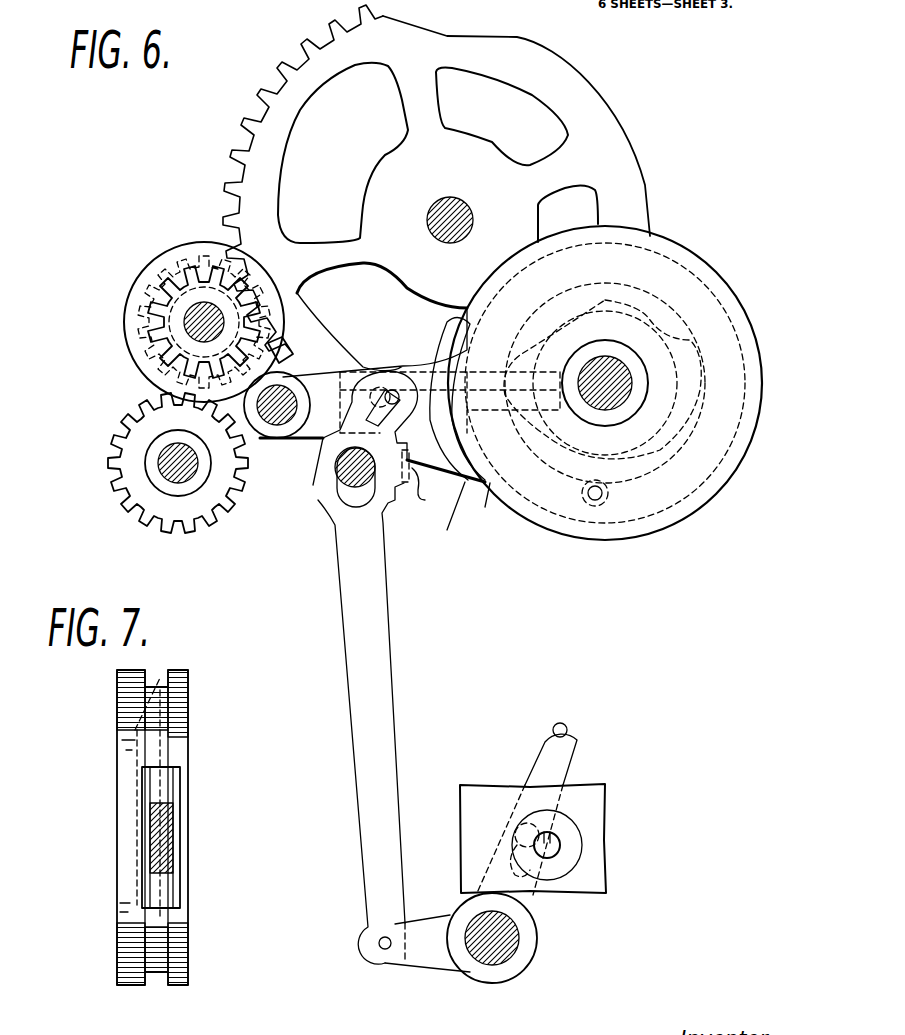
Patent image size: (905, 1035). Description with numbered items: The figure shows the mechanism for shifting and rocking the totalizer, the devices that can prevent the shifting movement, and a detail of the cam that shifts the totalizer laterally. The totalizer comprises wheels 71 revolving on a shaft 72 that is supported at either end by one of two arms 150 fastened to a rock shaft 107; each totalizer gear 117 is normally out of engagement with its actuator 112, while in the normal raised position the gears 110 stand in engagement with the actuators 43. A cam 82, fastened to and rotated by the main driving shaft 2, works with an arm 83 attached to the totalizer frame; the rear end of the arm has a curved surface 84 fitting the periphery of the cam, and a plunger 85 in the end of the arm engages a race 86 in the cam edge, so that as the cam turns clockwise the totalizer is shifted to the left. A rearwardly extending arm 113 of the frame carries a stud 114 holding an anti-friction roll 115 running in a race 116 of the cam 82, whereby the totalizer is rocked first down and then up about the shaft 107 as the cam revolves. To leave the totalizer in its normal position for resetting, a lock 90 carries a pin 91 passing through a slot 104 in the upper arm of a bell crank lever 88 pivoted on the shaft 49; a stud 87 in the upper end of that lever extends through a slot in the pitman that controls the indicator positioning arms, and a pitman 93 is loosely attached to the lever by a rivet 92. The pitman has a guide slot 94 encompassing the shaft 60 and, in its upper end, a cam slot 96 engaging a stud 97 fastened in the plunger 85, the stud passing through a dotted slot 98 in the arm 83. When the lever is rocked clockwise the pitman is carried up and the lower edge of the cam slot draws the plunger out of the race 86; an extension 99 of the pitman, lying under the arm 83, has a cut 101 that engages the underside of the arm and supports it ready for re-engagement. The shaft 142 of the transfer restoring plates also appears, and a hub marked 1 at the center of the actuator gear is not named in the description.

In FIG. 6, the main shaft 1 is at (463, 208).
In FIG. 6, the main driving shaft 2 is at (630, 383).
In FIG. 6, the actuators 43 is at (578, 100).
In FIG. 6, the shaft 49 is at (500, 946).
In FIG. 6, the shaft 60 is at (348, 470).
In FIG. 6, the totalizer wheels 71 is at (190, 243).
In FIG. 6, the shaft 72 is at (200, 320).
In FIG. 6, the cam 82 is at (538, 525).
In FIG. 7, the cam 82 is at (188, 750).
In FIG. 6, the arm 83 is at (312, 430).
In FIG. 7, the arm 83 is at (176, 812).
In FIG. 6, the curved surface 84 is at (488, 485).
In FIG. 6, the plunger 85 is at (503, 405).
In FIG. 7, the plunger 85 is at (173, 836).
In FIG. 6, the race 86 is at (458, 352).
In FIG. 7, the race 86 is at (158, 686).
In FIG. 6, the stud 87 is at (568, 731).
In FIG. 6, the bell crank lever 88 is at (535, 765).
In FIG. 6, the lock 90 is at (562, 845).
In FIG. 6, the pin 91 is at (518, 835).
In FIG. 6, the rivet 92 is at (378, 942).
In FIG. 6, the pitman 93 is at (384, 700).
In FIG. 6, the guide slot 94 is at (350, 503).
In FIG. 6, the cam slot 96 is at (342, 407).
In FIG. 6, the stud 97 is at (392, 390).
In FIG. 6, the slot 98 is at (372, 395).
In FIG. 6, the extension 99 is at (404, 485).
In FIG. 6, the cut 101 is at (436, 489).
In FIG. 6, the slot 104 is at (510, 872).
In FIG. 6, the rock shaft 107 is at (278, 425).
In FIG. 6, the gears 110 is at (140, 322).
In FIG. 6, the actuators 112 is at (140, 440).
In FIG. 6, the arm 113 is at (462, 492).
In FIG. 6, the stud 114 is at (600, 506).
In FIG. 6, the anti-friction roll 115 is at (590, 502).
In FIG. 6, the race 116 is at (690, 505).
In FIG. 6, the totalizer gear 117 is at (168, 282).
In FIG. 6, the shaft 142 is at (188, 480).
In FIG. 6, the arms 150 is at (283, 360).